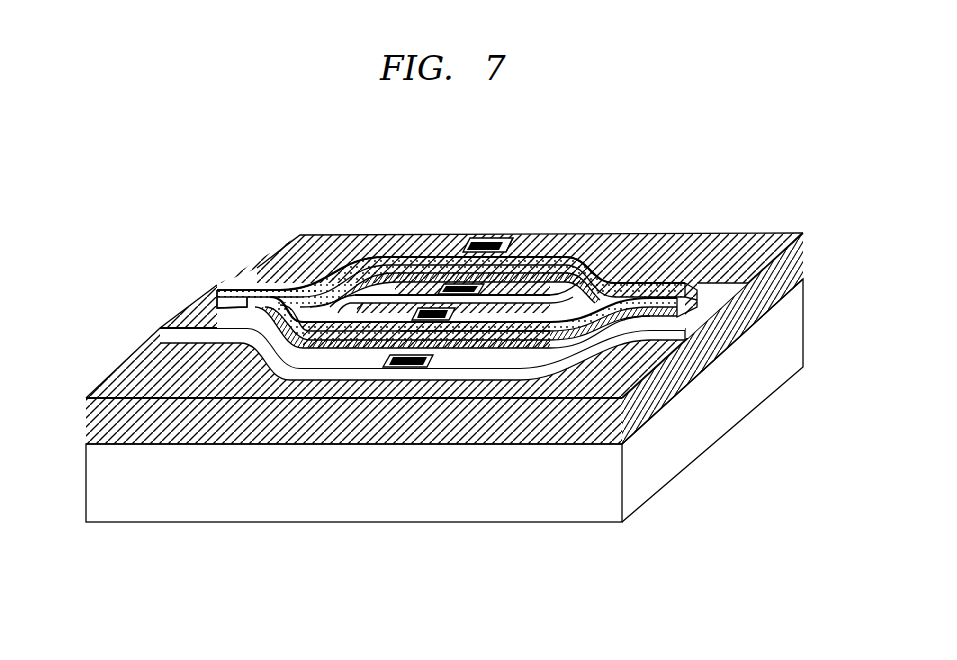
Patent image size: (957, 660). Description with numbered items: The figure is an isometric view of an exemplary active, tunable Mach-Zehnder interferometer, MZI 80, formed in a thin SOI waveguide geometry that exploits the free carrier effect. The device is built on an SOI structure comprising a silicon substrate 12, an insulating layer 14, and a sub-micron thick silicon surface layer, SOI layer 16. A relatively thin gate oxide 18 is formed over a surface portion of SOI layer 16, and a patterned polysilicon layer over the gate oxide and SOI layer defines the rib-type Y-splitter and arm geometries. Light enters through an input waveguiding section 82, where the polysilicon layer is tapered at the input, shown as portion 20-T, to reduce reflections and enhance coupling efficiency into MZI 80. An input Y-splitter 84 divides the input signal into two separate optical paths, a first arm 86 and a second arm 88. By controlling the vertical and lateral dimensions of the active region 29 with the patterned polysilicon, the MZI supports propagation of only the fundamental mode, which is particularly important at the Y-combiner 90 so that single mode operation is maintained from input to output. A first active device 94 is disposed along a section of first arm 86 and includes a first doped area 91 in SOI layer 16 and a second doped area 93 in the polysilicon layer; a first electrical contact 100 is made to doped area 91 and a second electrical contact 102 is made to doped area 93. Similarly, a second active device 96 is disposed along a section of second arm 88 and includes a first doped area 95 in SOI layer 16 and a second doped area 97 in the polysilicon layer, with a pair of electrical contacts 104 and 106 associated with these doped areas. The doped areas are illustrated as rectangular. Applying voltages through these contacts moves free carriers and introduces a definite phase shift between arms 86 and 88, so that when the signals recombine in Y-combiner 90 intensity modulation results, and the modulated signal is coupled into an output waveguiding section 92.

The silicon substrate 12 is at (807, 341).
The insulating layer 14 is at (807, 266).
The SOI layer 16 is at (160, 329).
The gate oxide 18 is at (683, 303).
The tapered input portion of polysilicon layer 20-T is at (240, 287).
The active region 29 is at (158, 312).
The Mach-Zehnder interferometer 80 is at (590, 153).
The input waveguiding section 82 is at (200, 313).
The input Y-splitter 84 is at (272, 289).
The first arm 86 is at (395, 257).
The second arm 88 is at (300, 347).
The Y-combiner 90 is at (605, 258).
The first doped area 91 is at (436, 282).
The output waveguiding section 92 is at (670, 282).
The second doped area 93 is at (517, 238).
The first active device 94 is at (509, 218).
The first doped area 95 is at (390, 366).
The second active device 96 is at (445, 462).
The second doped area 97 is at (447, 321).
The first electrical contact 100 is at (448, 285).
The second electrical contact 102 is at (481, 238).
The electrical contact 104 is at (404, 369).
The electrical contact 106 is at (468, 336).